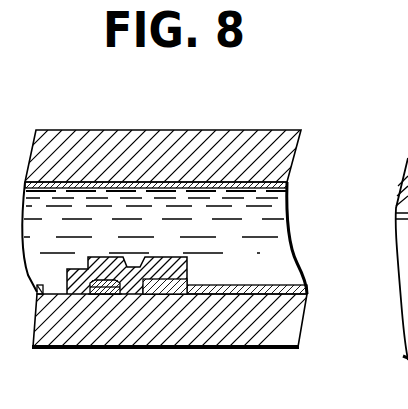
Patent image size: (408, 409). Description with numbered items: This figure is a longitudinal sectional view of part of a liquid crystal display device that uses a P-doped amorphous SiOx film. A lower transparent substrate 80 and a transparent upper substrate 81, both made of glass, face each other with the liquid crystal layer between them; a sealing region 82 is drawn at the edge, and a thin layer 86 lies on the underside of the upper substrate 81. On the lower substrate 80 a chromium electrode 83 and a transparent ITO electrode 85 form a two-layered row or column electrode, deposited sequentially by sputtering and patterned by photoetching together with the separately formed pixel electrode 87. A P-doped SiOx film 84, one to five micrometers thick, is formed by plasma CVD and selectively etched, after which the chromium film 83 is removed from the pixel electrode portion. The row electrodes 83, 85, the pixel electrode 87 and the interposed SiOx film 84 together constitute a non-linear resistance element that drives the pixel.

The lower transparent substrate 80 is at (233, 330).
The transparent upper substrate 81 is at (264, 130).
The sealing member 82 is at (287, 208).
The chromium electrode 83 is at (95, 295).
The P-doped SiOx film 84 is at (186, 258).
The transparent electrode 85 is at (110, 291).
The counter electrode 86 is at (172, 184).
The pixel electrode 87 is at (283, 284).